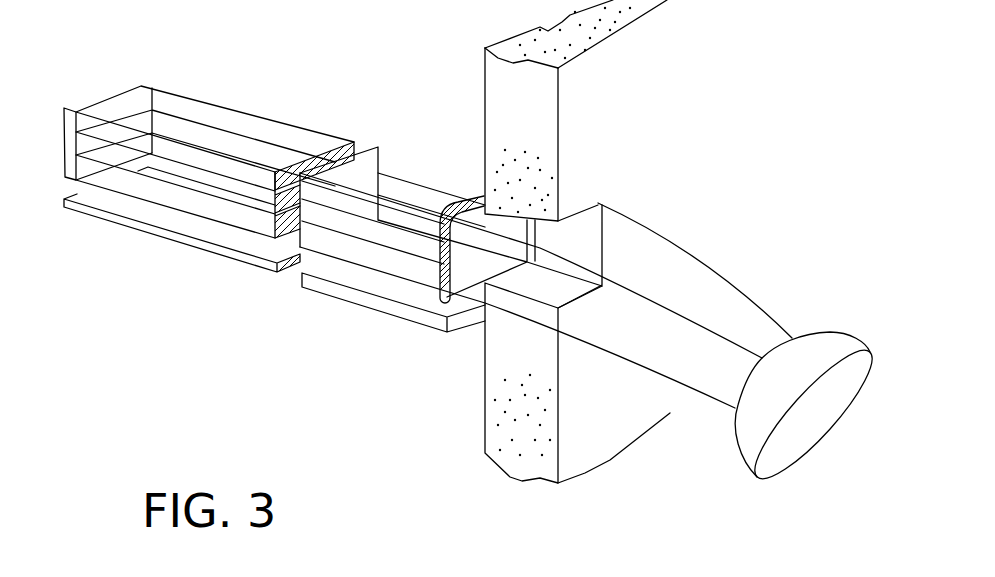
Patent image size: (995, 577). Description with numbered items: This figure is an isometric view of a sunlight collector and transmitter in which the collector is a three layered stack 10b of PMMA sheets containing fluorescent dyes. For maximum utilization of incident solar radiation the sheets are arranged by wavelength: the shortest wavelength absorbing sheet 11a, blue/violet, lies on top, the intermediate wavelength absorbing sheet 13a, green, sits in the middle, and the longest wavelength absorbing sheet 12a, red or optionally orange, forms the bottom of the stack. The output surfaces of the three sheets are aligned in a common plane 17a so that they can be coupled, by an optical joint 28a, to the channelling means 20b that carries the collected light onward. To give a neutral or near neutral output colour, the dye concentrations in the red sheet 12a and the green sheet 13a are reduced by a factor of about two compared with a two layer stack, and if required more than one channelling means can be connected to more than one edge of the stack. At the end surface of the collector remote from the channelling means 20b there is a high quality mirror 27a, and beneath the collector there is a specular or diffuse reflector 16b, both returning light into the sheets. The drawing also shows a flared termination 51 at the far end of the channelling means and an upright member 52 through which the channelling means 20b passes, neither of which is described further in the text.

The three layered stack collector 10b is at (340, 115).
The shortest wavelength absorbing sheet 11a is at (108, 133).
The longest wavelength absorbing sheet 12a is at (152, 190).
The intermediate wavelength absorbing sheet 13a is at (113, 157).
The specular or diffuse reflector 16b is at (195, 243).
The plane 17a is at (435, 278).
The channelling means 20b is at (653, 347).
The high quality mirror 27a is at (77, 107).
The optical joint 28a is at (460, 204).
The lamp reflector 51 is at (767, 455).
The support post 52 is at (536, 455).